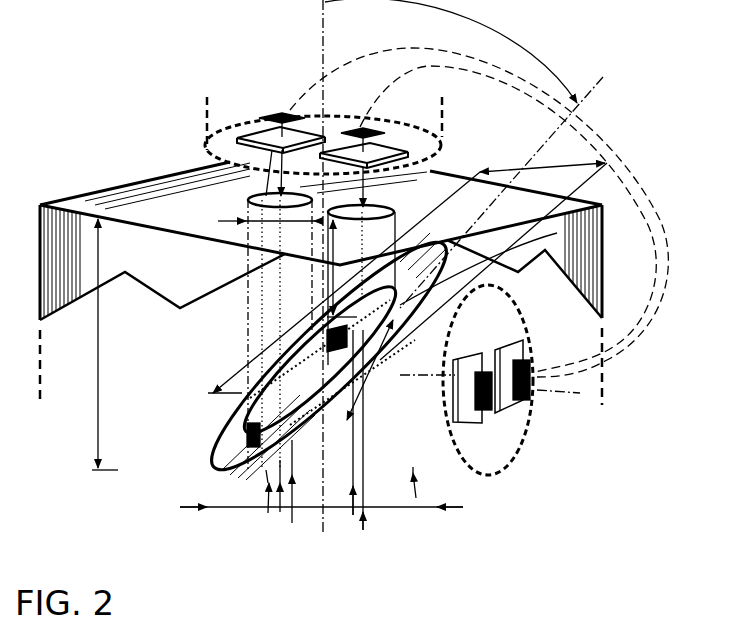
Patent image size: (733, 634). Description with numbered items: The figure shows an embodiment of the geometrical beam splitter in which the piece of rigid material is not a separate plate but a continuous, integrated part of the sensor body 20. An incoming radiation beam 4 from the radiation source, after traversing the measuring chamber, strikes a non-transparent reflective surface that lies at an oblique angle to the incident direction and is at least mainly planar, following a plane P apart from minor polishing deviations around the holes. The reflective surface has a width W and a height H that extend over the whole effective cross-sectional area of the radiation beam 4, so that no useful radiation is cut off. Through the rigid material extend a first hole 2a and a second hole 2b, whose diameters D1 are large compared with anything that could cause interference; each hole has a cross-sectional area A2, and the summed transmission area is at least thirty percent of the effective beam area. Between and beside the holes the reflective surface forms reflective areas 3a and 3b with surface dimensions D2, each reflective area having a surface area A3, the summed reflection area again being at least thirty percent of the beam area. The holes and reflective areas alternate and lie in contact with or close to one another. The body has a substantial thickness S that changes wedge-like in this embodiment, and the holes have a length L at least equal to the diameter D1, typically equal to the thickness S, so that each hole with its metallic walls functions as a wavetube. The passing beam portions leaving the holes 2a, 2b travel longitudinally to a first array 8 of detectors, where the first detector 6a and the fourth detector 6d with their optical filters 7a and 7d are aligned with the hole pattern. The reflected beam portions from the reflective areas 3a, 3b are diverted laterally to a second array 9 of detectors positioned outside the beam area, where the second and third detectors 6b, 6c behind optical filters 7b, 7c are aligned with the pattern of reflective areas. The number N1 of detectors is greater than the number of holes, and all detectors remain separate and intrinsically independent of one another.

The sensor body 20 is at (190, 226).
The first hole 2a is at (225, 415).
The second hole 2b is at (493, 262).
The first reflective area 3a is at (285, 330).
The second reflective area 3b is at (397, 395).
The radiation beam 4 is at (297, 463).
The first detector 6a is at (275, 115).
The second detector 6b is at (533, 403).
The third detector 6c is at (487, 413).
The fourth detector 6d is at (368, 130).
The first optical filter 7a is at (258, 135).
The second optical filter 7b is at (523, 420).
The third optical filter 7c is at (473, 417).
The fourth optical filter 7d is at (372, 152).
The first array of detectors 8 is at (207, 152).
The second lateral array of detectors 9 is at (482, 462).
The hole cross-sectional area A2 is at (212, 452).
The reflective area surface area A3 is at (240, 407).
The number of detectors N1 is at (479, 212).
The plane P is at (515, 208).
The width W is at (493, 252).
The height H is at (344, 282).
The thickness S is at (106, 344).
The hole length L is at (342, 268).
The hole diameter D1 is at (268, 213).
The reflective area surface dimension D2 is at (398, 398).